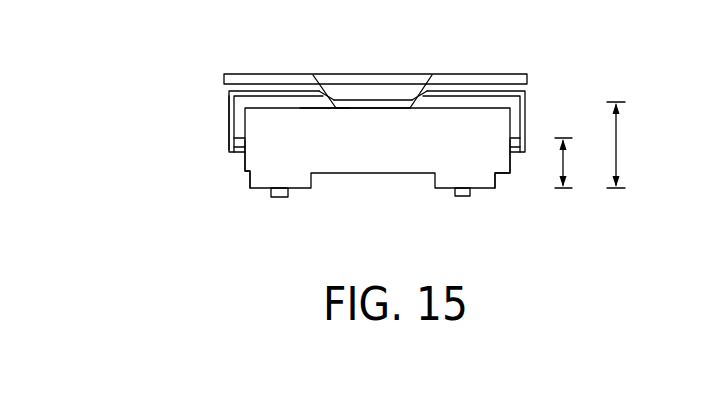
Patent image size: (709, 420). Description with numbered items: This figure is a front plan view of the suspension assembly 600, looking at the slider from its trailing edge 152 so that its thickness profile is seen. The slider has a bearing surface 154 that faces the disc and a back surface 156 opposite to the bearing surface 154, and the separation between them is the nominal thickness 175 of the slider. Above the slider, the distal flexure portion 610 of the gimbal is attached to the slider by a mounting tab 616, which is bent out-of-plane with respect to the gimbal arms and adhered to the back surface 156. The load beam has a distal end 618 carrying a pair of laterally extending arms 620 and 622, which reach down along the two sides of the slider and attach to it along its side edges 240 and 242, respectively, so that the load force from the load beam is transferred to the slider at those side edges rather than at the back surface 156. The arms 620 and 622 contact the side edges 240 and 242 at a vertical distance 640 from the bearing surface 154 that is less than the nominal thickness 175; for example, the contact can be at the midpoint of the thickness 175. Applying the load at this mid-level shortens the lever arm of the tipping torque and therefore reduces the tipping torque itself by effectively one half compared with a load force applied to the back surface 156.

The suspension assembly 600 is at (232, 228).
The distal flexure portion 610 is at (281, 73).
The mounting tab 616 is at (360, 107).
The distal end 618 is at (404, 88).
The laterally extending arm 620 is at (528, 110).
The laterally extending arm 622 is at (228, 121).
The trailing edge 152 is at (373, 150).
The back surface 156 is at (323, 112).
The side edge 242 is at (247, 163).
The side edge 240 is at (512, 160).
The bearing surface 154 is at (294, 188).
The vertical distance 640 is at (566, 162).
The nominal thickness 175 is at (618, 145).